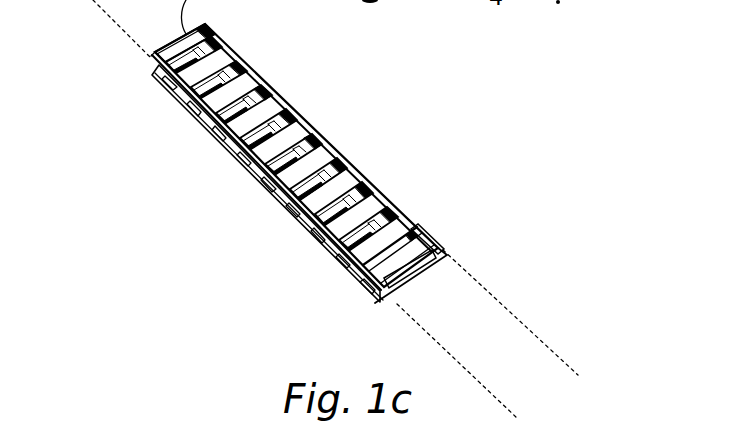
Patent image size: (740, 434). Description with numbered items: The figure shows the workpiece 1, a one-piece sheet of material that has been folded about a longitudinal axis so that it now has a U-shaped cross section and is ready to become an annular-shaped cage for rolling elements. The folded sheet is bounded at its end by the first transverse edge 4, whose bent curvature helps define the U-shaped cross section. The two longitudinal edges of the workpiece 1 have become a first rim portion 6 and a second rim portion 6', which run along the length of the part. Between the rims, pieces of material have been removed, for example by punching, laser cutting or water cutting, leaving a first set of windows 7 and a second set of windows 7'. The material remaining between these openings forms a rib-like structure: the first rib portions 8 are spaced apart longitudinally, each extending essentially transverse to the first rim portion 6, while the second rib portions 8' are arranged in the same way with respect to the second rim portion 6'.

The workpiece 1 is at (480, 154).
The first transverse edge 4 is at (441, 272).
The first rim portion 6 is at (266, 171).
The second rim portion 6' is at (267, 183).
The first set of windows 7 is at (318, 130).
The first rib portion 8 is at (355, 161).
The second set of windows 7' is at (392, 297).
The second rib portion 8' is at (427, 287).